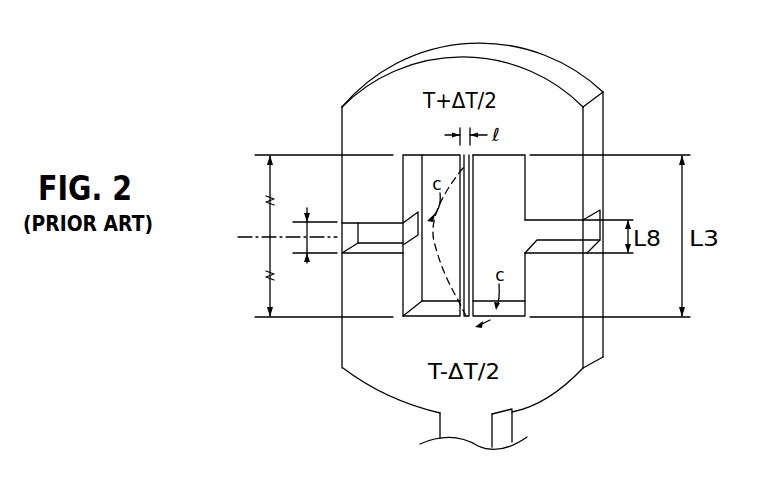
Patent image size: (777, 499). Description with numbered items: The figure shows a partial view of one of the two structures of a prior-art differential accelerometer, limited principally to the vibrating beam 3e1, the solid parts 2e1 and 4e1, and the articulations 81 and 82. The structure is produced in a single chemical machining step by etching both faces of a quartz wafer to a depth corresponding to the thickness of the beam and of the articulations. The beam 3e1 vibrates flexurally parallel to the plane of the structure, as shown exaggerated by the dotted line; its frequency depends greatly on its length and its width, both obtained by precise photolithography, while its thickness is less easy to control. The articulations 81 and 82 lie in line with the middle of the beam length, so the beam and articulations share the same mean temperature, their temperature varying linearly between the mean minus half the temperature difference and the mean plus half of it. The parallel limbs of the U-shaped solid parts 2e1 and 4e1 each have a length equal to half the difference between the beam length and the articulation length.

The solid part 2e1 is at (363, 128).
The vibrating beam 3e1 is at (462, 182).
The solid part 4e1 is at (365, 353).
The articulation 81 is at (410, 234).
The articulation 82 is at (567, 233).